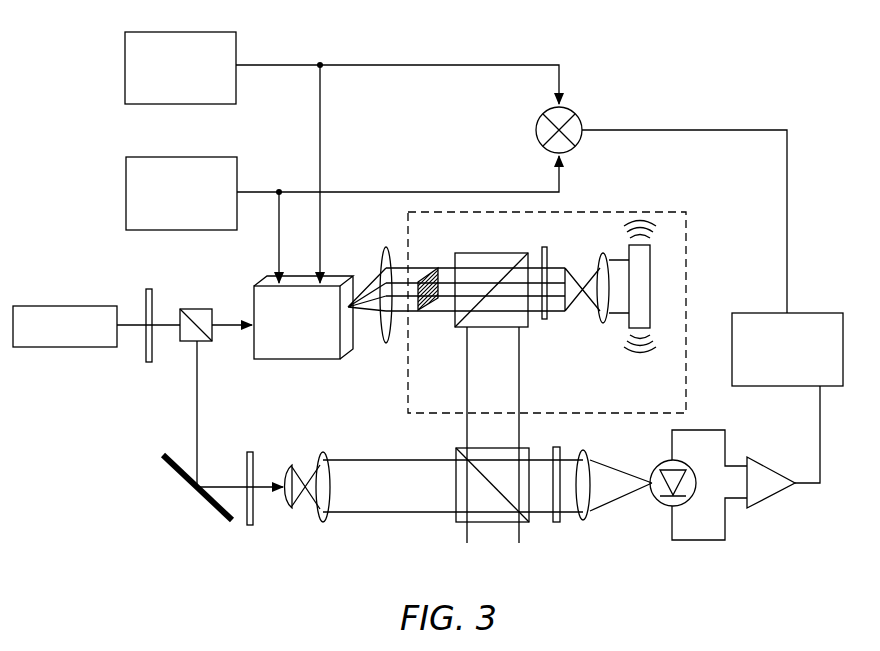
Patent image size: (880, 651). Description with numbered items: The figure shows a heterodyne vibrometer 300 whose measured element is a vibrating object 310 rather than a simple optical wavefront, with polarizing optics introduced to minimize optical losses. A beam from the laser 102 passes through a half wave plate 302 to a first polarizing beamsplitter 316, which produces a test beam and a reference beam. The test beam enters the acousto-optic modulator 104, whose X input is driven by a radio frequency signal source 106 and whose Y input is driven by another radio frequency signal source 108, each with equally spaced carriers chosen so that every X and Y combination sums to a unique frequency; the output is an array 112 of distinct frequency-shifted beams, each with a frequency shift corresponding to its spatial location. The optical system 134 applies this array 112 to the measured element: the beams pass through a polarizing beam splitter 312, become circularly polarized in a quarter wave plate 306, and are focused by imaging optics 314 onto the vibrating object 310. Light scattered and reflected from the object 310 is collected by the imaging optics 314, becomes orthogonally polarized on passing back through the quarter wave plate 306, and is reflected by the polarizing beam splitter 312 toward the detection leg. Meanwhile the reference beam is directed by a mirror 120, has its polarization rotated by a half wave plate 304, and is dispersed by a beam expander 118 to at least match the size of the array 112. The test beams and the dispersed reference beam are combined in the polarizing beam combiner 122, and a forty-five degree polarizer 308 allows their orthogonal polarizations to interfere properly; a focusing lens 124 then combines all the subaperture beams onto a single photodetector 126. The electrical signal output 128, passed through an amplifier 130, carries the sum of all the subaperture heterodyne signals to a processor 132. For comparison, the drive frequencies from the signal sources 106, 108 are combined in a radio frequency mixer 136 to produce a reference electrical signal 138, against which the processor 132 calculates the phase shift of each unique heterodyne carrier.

The heterodyne vibrometer 300 is at (620, 44).
The laser 102 is at (96, 347).
The acousto-optic modulator 104 is at (300, 360).
The radio frequency signal source 106 is at (176, 104).
The radio frequency signal source 108 is at (186, 230).
The array of distinct frequency-shifted beams 112 is at (445, 247).
The beam expander 118 is at (311, 521).
The mirror 120 is at (196, 490).
The polarizing beam combiner 122 is at (498, 522).
The focusing lens 124 is at (586, 521).
The photodetector 126 is at (670, 463).
The electrical signal output 128 is at (820, 466).
The amplifier 130 is at (758, 503).
The processor 132 is at (766, 313).
The optical system 134 is at (612, 212).
The radio frequency mixer 136 is at (577, 115).
The reference electrical signal 138 is at (726, 130).
The half wave plate 302 is at (148, 362).
The half wave plate 304 is at (252, 526).
The quarter wave plate 306 is at (545, 247).
The polarizer 308 is at (558, 523).
The vibrating object 310 is at (626, 328).
The polarizing beam splitter 312 is at (478, 312).
The imaging optics 314 is at (590, 324).
The first polarizing beamsplitter 316 is at (196, 342).